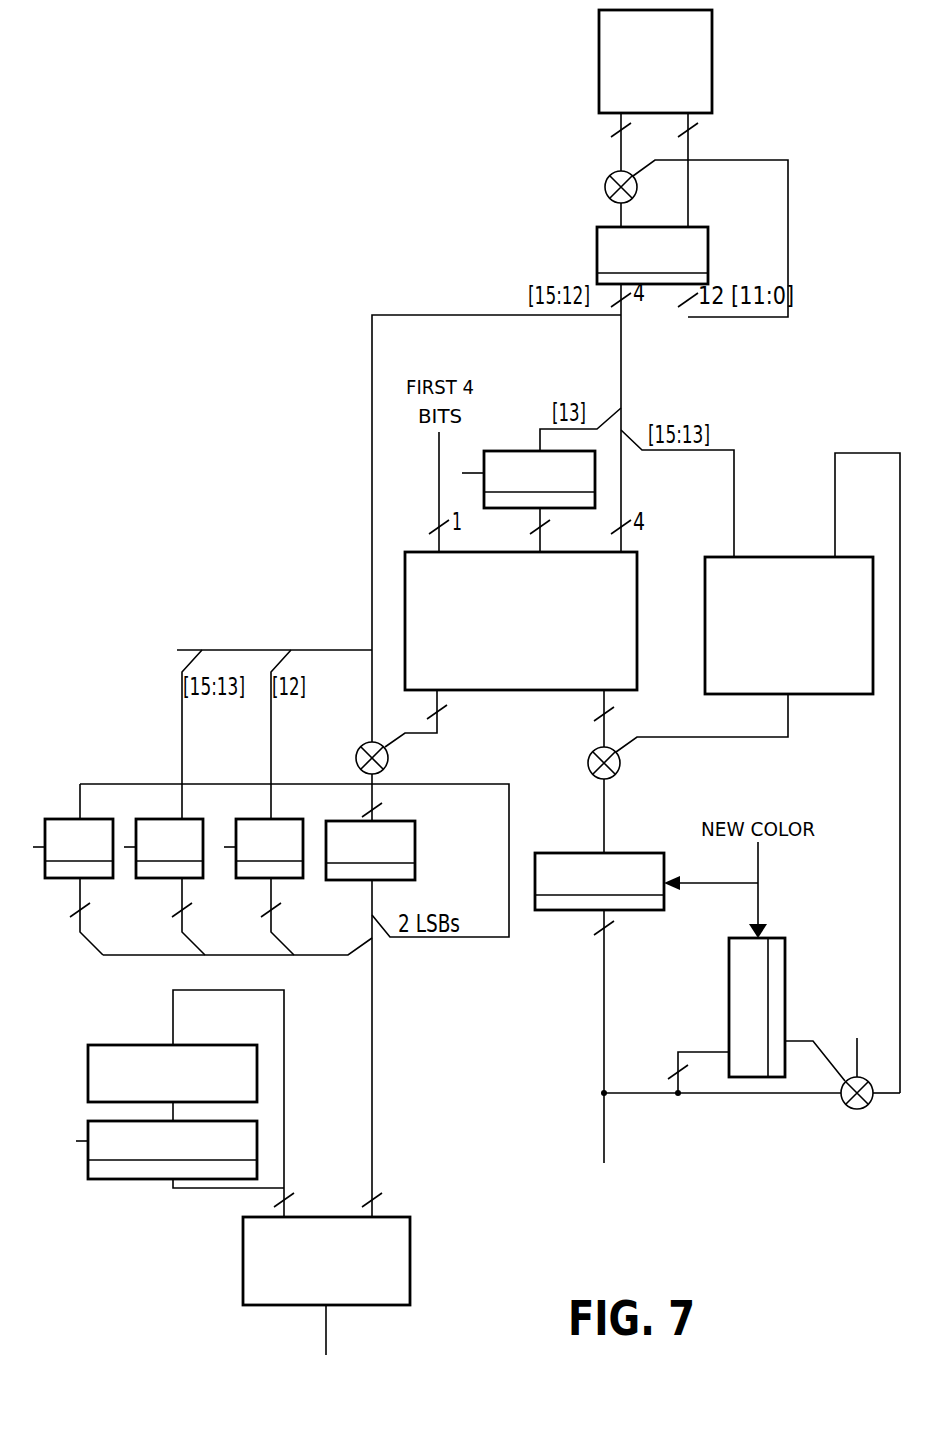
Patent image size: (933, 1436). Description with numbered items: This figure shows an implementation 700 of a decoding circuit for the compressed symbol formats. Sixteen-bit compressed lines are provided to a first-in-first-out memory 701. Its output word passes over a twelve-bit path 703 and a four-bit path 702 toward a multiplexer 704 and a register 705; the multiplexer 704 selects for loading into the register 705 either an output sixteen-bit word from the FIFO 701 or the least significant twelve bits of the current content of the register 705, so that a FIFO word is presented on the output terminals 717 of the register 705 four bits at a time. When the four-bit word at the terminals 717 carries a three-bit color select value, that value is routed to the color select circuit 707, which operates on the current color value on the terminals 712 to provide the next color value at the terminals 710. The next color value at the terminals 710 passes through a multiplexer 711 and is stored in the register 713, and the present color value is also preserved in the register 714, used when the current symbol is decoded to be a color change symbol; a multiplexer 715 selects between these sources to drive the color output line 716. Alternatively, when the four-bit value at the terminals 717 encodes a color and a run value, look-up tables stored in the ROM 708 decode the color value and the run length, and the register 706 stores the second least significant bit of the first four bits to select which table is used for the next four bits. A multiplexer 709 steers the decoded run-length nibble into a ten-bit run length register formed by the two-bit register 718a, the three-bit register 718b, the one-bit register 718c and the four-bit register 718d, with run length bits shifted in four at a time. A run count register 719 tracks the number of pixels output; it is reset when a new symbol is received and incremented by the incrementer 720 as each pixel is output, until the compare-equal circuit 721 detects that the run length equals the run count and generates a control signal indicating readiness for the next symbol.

The implementation of decoding circuit 700 is at (203, 152).
The first-in-first-out memory 701 is at (712, 62).
The 4-bit bus 702 is at (696, 134).
The 12-bit bus 703 is at (614, 121).
The multiplexer 704 is at (605, 190).
The register 705 is at (597, 248).
The register 706 is at (514, 451).
The color select circuit 707 is at (705, 628).
The ROM 708 is at (490, 690).
The multiplexer 709 is at (414, 733).
The terminals 710 is at (705, 737).
The multiplexer 711 is at (598, 750).
The terminals 712 is at (874, 453).
The register 713 is at (574, 912).
The register 714 is at (782, 938).
The multiplexer 715 is at (860, 1110).
The color output line 716 is at (604, 1116).
The output terminals 717 is at (374, 315).
The 2-bit register 718a is at (80, 819).
The 3-bit register 718b is at (182, 819).
The 1-bit register 718c is at (272, 819).
The 4-bit register 718d is at (415, 852).
The run count register 719 is at (88, 1174).
The incrementer 720 is at (112, 1045).
The compare equal circuit 721 is at (243, 1254).